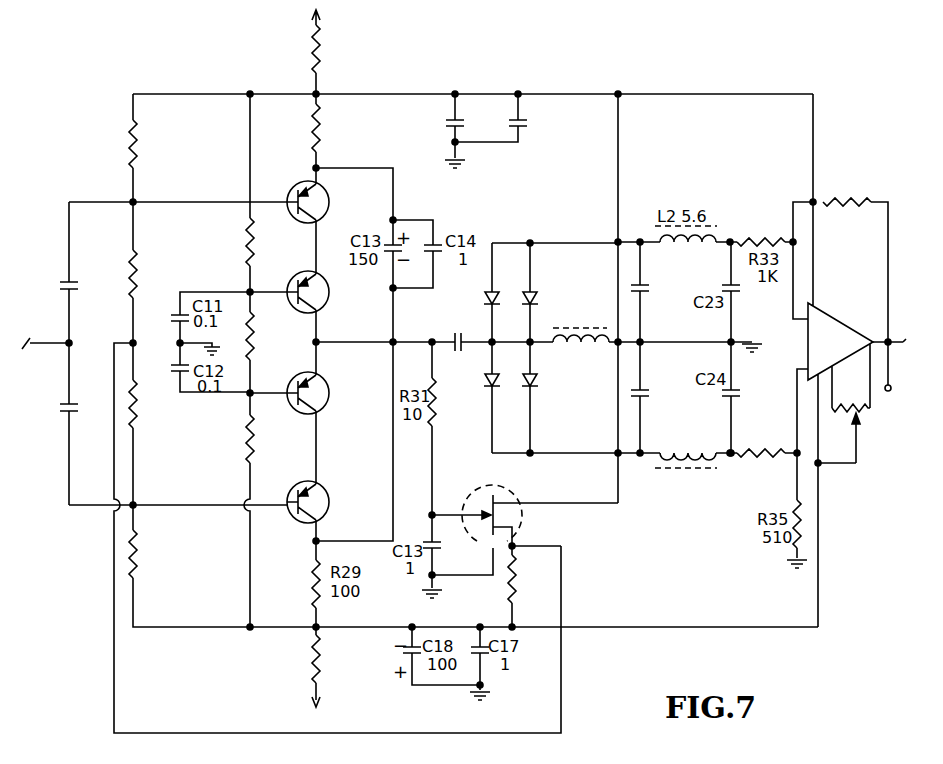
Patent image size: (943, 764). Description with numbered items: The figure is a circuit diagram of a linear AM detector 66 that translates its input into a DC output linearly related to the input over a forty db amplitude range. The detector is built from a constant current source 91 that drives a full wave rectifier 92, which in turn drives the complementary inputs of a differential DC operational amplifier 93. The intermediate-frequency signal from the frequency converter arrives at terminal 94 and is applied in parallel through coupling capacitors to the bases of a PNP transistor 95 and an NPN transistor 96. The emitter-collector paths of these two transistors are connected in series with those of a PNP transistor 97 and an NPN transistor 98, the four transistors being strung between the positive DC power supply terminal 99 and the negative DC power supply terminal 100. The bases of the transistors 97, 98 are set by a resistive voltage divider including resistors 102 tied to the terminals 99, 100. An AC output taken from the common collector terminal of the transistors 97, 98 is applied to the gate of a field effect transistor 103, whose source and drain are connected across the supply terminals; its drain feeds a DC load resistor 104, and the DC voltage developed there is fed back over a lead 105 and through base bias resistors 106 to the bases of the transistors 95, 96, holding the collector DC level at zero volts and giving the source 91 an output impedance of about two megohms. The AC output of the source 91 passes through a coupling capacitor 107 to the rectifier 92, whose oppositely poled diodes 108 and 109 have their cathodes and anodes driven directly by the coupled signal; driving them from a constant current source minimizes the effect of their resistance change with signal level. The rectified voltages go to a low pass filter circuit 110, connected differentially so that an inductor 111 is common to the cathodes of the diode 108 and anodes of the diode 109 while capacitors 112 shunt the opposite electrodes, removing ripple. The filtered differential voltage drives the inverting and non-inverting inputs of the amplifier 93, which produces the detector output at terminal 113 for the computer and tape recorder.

The linear AM detector 66 is at (450, 66).
The constant current source 91 is at (83, 143).
The full wave rectifier 92 is at (522, 234).
The differential DC operational amplifier 93 is at (777, 176).
The terminal 94 is at (69, 343).
The PNP transistor 95 is at (327, 213).
The NPN transistor 96 is at (328, 516).
The PNP transistor 97 is at (326, 306).
The NPN transistor 98 is at (326, 413).
The positive DC power supply terminal 99 is at (316, 94).
The negative DC power supply terminal 100 is at (312, 633).
The resistors 102 is at (245, 241).
The field effect transistor 103 is at (483, 492).
The DC load resistor 104 is at (508, 593).
The lead 105 is at (212, 733).
The base bias resistors 106 is at (130, 257).
The coupling capacitor 107 is at (455, 337).
The diode 108 is at (526, 296).
The diode 109 is at (527, 391).
The low pass filter circuit 110 is at (714, 505).
The inductor 111 is at (610, 332).
The capacitors 112 is at (646, 283).
The terminal 113 is at (889, 339).